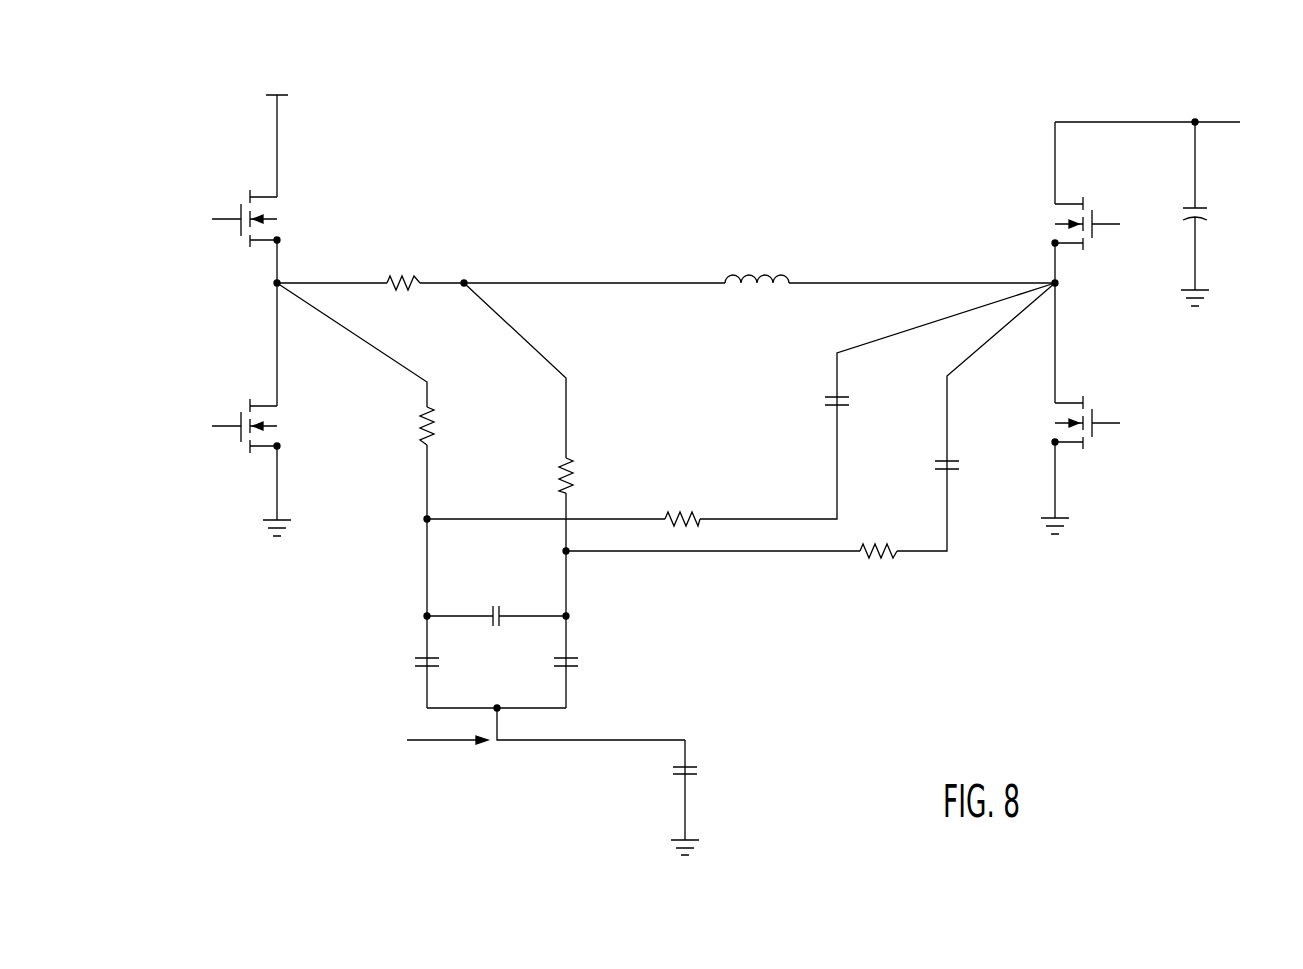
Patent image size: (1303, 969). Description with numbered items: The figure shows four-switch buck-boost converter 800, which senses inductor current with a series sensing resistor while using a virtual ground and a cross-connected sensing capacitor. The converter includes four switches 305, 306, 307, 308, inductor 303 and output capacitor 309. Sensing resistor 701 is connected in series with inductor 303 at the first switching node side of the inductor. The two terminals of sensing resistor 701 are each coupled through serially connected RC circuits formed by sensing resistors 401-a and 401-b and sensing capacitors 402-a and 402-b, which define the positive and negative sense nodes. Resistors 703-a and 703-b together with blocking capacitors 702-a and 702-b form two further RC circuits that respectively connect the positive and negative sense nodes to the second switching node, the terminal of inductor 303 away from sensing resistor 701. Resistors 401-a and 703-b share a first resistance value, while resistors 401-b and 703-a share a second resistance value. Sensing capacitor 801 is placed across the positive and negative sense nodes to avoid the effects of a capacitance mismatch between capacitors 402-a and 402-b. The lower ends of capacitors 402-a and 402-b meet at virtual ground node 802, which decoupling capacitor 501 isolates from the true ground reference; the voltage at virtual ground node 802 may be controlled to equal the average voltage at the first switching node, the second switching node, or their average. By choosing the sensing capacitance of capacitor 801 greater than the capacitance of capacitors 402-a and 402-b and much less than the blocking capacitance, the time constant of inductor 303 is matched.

The four-switch buck-boost converter 800 is at (684, 102).
The switch 305 is at (242, 190).
The switch 306 is at (242, 455).
The switch 307 is at (1092, 398).
The switch 308 is at (1092, 198).
The output capacitor 309 is at (1212, 214).
The inductor 303 is at (760, 286).
The sensing resistor 701 is at (418, 290).
The sensing resistor 401-a is at (441, 427).
The sensing resistor 401-b is at (556, 476).
The sensing capacitor 402-a is at (409, 661).
The sensing capacitor 402-b is at (590, 661).
The blocking capacitor 702-a is at (816, 404).
The blocking capacitor 702-b is at (958, 478).
The resistor 703-a is at (700, 510).
The resistor 703-b is at (882, 562).
The sensing capacitor 801 is at (497, 636).
The virtual ground node 802 is at (592, 742).
The decoupling capacitor 501 is at (698, 758).